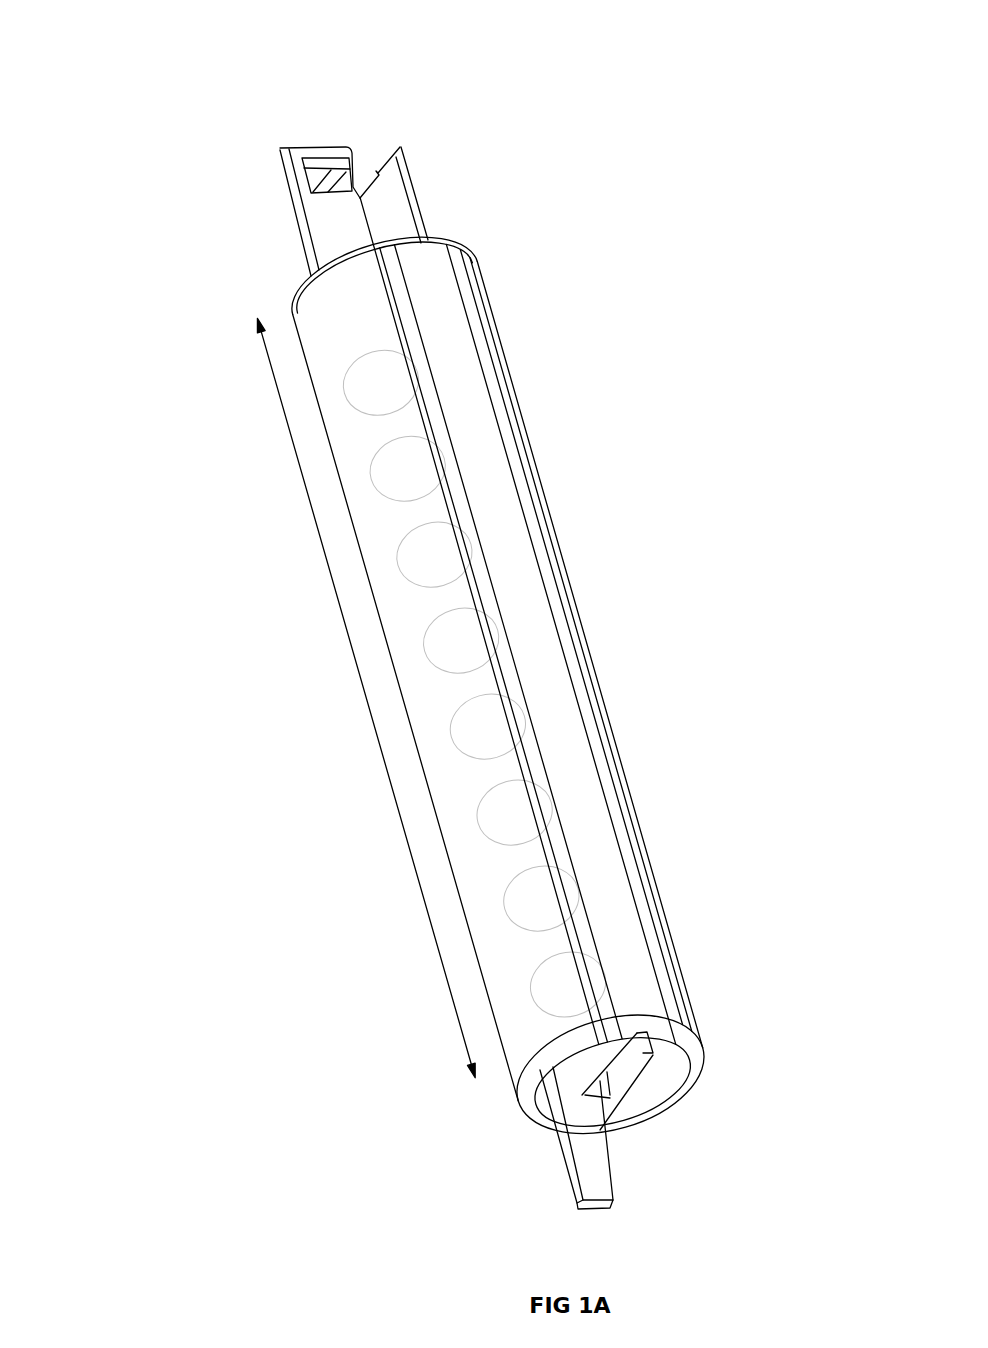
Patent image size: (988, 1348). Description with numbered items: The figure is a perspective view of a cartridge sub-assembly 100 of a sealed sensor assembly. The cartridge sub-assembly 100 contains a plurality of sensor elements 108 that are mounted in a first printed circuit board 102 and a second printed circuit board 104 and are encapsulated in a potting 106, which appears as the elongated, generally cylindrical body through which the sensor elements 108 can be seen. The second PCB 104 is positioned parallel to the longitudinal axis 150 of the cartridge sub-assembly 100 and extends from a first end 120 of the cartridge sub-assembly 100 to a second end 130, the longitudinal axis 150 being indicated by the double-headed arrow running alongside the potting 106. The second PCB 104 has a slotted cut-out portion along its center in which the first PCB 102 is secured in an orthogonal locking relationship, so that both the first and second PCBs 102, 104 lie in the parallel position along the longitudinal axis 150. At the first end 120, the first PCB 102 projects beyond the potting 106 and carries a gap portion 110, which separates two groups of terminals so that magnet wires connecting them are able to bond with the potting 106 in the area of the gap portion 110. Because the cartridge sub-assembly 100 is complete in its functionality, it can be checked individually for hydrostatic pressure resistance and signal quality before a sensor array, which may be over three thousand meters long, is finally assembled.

The cartridge sub-assembly 100 is at (160, 38).
The first printed circuit board 102 is at (296, 152).
The second printed circuit board 104 is at (398, 205).
The potting 106 is at (363, 468).
The sensor elements 108 is at (462, 352).
The gap portion 110 is at (364, 176).
The first end 120 is at (255, 153).
The second end 130 is at (538, 1126).
The longitudinal axis 150 is at (417, 883).